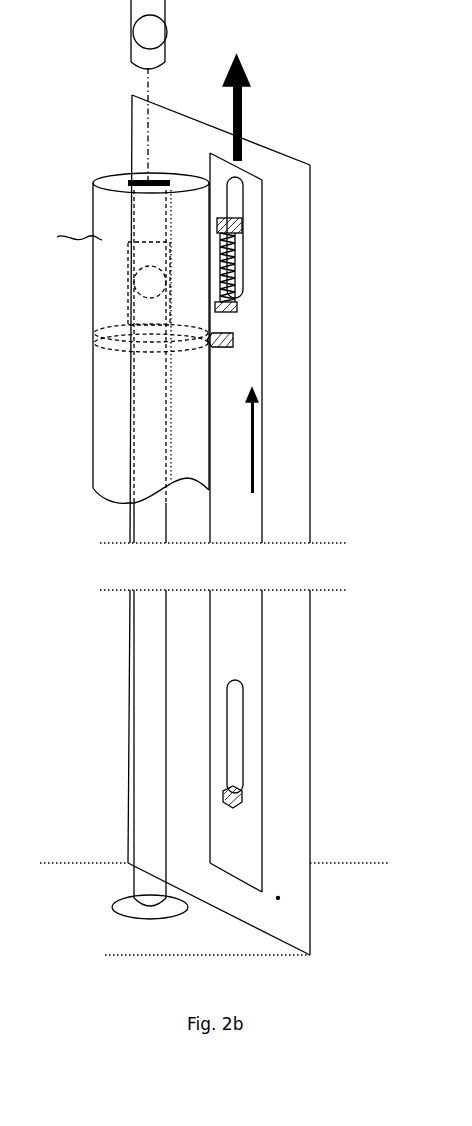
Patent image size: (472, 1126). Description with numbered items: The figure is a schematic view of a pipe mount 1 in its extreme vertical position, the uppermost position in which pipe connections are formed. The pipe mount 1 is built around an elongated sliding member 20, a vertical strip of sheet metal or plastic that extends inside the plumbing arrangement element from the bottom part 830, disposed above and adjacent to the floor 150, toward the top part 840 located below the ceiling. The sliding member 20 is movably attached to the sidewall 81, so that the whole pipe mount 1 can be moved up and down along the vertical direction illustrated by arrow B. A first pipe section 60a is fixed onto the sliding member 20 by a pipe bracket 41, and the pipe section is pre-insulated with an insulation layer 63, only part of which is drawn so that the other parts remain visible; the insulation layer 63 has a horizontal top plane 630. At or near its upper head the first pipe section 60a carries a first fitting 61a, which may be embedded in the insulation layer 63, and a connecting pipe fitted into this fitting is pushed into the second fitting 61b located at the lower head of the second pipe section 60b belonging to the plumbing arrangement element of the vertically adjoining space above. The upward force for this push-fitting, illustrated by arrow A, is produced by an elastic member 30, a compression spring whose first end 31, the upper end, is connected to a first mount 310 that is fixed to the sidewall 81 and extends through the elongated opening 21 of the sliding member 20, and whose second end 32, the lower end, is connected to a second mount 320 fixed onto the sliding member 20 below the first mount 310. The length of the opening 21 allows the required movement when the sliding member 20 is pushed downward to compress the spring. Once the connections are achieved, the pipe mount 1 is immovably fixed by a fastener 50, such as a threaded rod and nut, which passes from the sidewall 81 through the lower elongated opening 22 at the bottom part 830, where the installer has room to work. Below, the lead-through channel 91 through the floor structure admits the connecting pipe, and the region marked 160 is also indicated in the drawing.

The pipe mount 1 is at (257, 161).
The sliding member 20 is at (222, 385).
The elongated opening 21 is at (236, 200).
The elongated opening 22 is at (235, 722).
The elastic member 30 is at (240, 250).
The first end 31 is at (243, 226).
The second end 32 is at (238, 298).
The pipe bracket 41 is at (233, 342).
The fastener 50 is at (243, 792).
The first pipe section 60a is at (142, 520).
The second pipe section 60b is at (147, 69).
The first fitting 61a is at (148, 286).
The second fitting 61b is at (150, 48).
The insulation layer 63 is at (59, 171).
The sidewall 81 is at (279, 477).
The lead-through channel 91 is at (144, 912).
The floor 150 is at (330, 941).
The middle region 160 is at (330, 691).
The first mount 310 is at (245, 212).
The second mount 320 is at (236, 310).
The horizontal top plane 630 is at (120, 184).
The bottom part 830 is at (280, 898).
The top part 840 is at (188, 135).
The arrow A is at (244, 108).
The arrow B is at (255, 420).